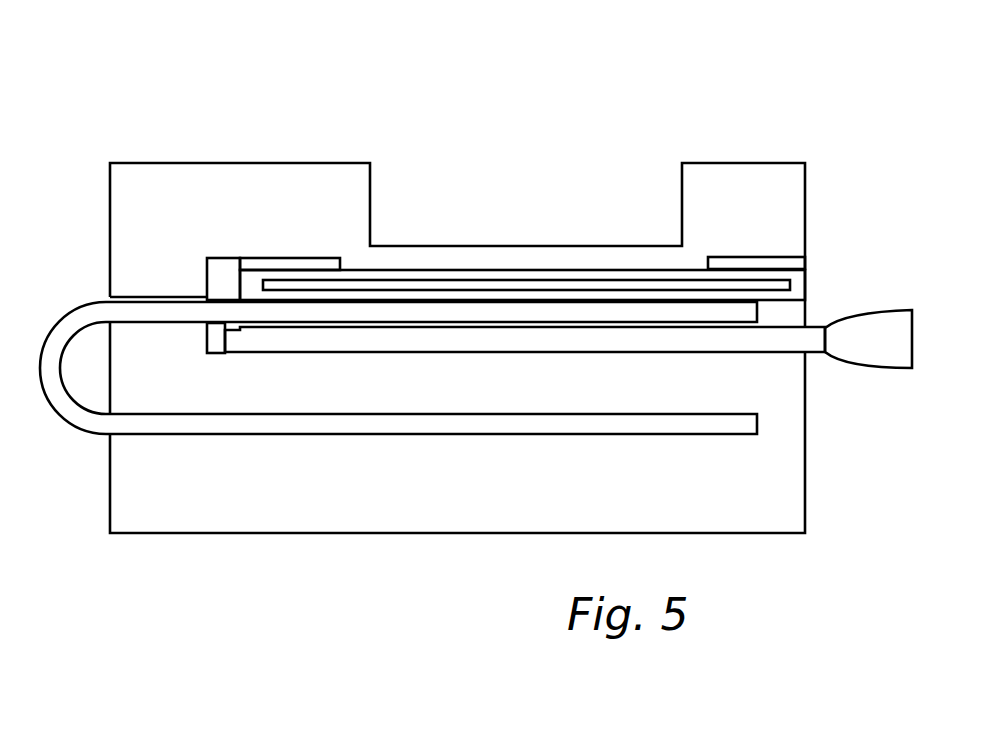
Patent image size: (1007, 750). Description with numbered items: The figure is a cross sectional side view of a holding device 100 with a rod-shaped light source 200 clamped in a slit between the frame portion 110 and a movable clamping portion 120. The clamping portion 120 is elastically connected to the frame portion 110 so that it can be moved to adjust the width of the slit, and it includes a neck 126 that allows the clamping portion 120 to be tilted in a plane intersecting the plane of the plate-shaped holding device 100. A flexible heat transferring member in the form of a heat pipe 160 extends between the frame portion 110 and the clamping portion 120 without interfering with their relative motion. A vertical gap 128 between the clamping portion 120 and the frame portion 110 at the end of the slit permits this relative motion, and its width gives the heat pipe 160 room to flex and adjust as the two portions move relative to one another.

The holding device 100 is at (685, 94).
The frame portion 110 is at (762, 162).
The clamping portion 120 is at (807, 315).
The neck 126 is at (240, 277).
The vertical gap 128 is at (222, 285).
The heat pipe 160 is at (70, 423).
The light source 200 is at (815, 354).